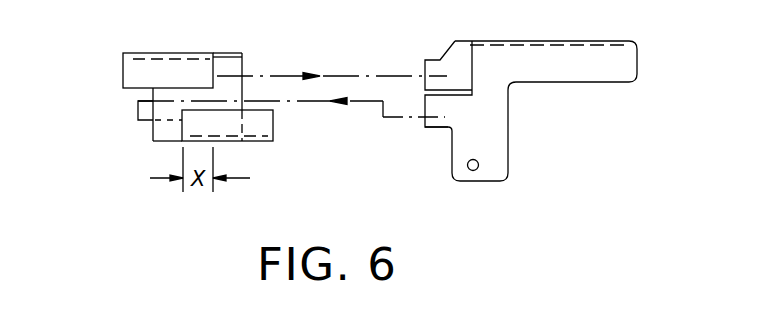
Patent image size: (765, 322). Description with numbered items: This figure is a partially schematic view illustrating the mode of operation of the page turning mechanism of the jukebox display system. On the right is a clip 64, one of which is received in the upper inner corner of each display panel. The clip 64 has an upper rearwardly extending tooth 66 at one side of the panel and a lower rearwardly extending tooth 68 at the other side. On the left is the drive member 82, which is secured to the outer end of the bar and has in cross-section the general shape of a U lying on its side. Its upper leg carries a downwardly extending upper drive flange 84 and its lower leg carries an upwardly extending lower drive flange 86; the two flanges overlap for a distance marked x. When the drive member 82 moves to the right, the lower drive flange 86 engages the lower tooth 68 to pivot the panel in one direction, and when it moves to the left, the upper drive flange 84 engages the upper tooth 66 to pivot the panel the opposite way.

The clip 64 is at (548, 76).
The upper rearwardly extending tooth 66 is at (432, 68).
The lower rearwardly extending tooth 68 is at (440, 124).
The drive member 82 is at (233, 68).
The upper drive flange 84 is at (125, 77).
The lower drive flange 86 is at (263, 125).